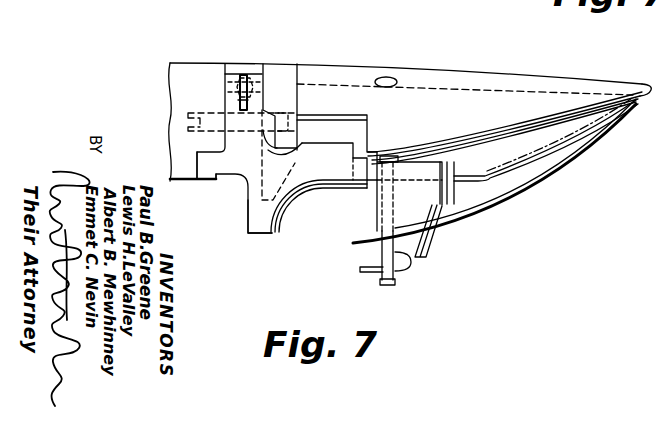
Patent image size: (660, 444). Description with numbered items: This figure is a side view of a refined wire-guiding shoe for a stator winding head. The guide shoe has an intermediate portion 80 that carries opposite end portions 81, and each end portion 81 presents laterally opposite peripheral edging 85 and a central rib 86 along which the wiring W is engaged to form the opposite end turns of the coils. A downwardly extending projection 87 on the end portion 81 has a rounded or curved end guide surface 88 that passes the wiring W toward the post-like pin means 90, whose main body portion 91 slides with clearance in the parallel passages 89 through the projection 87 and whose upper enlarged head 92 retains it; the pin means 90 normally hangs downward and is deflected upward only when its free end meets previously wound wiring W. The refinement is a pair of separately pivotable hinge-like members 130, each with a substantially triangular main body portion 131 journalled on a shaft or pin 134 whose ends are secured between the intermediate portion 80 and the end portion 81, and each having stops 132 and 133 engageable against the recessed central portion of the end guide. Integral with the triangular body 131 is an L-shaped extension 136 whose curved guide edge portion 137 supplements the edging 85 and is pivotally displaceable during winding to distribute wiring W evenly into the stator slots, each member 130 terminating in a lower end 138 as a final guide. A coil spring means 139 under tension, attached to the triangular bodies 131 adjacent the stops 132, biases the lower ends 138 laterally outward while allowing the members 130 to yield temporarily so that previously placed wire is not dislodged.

The intermediate portion of guide shoe means 80 is at (199, 72).
The end portion of guide shoe means 81 is at (430, 100).
The peripheral edging 85 is at (535, 118).
The central rib 86 is at (589, 120).
The downwardly extending projection 87 is at (455, 163).
The curved end guide surface 88 is at (440, 236).
The parallel passages 89 is at (394, 217).
The post-like pin means 90 is at (382, 285).
The main body portion of pin means 91 is at (396, 285).
The upper enlarged head 92 is at (391, 156).
The hinge-like member 130 is at (333, 255).
The triangular main body portion 131 is at (231, 75).
The stop 132 is at (258, 74).
The stop 133 is at (205, 165).
The shaft or pin 134 is at (188, 122).
The L-shaped extension 136 is at (318, 172).
The curved guide edge portion 137 is at (306, 192).
The lower end 138 is at (268, 235).
The spring means 139 is at (242, 100).
The wiring W is at (581, 150).